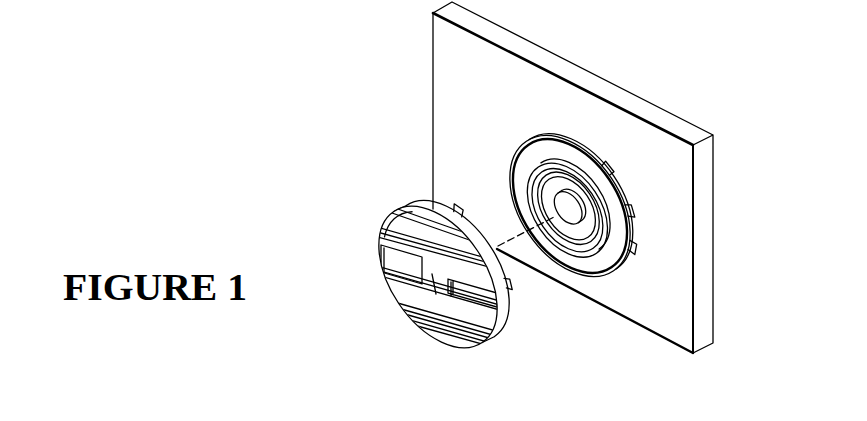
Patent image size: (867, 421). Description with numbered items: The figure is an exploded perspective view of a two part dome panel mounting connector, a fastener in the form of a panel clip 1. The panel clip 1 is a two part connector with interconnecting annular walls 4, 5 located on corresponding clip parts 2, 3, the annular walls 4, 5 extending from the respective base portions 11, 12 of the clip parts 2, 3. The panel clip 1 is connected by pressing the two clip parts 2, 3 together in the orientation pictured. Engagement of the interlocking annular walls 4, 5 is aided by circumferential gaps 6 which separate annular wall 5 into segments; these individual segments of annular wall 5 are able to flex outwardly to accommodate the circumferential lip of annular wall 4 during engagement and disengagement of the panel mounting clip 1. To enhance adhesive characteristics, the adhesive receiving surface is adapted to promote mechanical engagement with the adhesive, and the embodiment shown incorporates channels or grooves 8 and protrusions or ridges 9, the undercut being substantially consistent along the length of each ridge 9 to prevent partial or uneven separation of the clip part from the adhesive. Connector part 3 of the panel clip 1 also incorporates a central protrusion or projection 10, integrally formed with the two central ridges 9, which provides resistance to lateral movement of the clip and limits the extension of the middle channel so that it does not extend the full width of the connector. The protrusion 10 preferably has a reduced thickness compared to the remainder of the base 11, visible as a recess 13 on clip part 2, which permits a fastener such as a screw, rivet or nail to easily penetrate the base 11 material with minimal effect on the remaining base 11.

The panel clip 1 is at (316, 148).
The clip part 2 is at (617, 187).
The clip part 3 is at (442, 261).
The annular wall 4 is at (584, 211).
The annular wall 5 is at (505, 280).
The circumferential gaps 6 is at (453, 212).
The channels or grooves 8 is at (403, 290).
The protrusions or ridges 9 is at (395, 212).
The central protrusion or projection 10 is at (433, 284).
The base portion 11 is at (506, 278).
The base portion 12 is at (571, 205).
The recess 13 is at (607, 210).